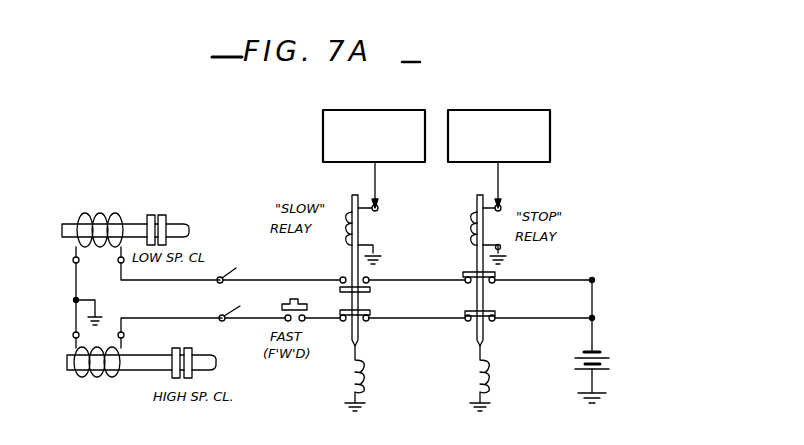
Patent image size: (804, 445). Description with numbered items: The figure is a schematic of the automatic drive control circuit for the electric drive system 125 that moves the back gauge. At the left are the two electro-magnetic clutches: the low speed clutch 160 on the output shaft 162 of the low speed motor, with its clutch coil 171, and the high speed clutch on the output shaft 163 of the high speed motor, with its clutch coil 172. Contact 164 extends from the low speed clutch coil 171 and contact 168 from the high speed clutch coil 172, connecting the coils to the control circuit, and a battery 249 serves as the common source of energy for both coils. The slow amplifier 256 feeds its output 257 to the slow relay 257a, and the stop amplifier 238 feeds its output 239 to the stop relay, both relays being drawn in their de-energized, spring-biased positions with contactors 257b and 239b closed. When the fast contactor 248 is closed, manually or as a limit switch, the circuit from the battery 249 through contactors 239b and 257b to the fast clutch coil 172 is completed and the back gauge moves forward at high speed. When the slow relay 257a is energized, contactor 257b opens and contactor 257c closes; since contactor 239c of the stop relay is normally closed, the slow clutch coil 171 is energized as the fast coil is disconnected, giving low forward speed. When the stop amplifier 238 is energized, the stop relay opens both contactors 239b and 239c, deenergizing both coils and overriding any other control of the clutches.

The electro-magnetic clutch 160 is at (165, 207).
The output shaft 162 is at (135, 221).
The clutch coil 171 is at (103, 214).
The clutch coil 172 is at (108, 378).
The output shaft 163 is at (145, 355).
The electric drive system 125 is at (145, 316).
The coil leads 164 is at (243, 267).
The coil leads 168 is at (233, 306).
The fast contactor 248 is at (280, 304).
The slow amplifier 256 is at (323, 136).
The slow amplifier output lead 257 is at (376, 186).
The slow relay 257a is at (362, 233).
The contactor 257c is at (371, 292).
The contactor 257b is at (371, 313).
The stop amplifier 238 is at (550, 141).
The stop amplifier output lead 239 is at (499, 186).
The contactor 239c is at (496, 275).
The contactor 239b is at (496, 313).
The battery 249 is at (609, 368).